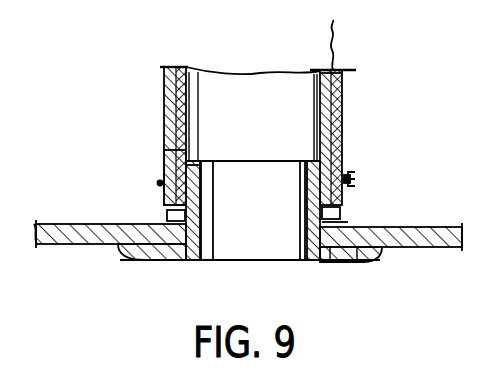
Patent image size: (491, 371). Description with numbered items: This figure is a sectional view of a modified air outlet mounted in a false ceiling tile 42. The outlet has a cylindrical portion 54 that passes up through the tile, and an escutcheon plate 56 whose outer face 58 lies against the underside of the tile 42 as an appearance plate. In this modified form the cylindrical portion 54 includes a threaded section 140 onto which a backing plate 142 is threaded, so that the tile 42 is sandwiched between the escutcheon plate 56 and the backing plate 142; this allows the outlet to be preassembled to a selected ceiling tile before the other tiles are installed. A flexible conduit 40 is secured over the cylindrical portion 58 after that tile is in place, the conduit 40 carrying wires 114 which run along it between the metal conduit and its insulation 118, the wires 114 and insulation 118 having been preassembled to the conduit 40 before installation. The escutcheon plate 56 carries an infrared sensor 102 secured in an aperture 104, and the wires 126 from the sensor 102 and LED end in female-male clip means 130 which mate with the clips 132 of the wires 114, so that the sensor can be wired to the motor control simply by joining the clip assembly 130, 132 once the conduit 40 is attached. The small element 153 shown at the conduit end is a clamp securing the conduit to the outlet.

The flexible conduit 40 is at (342, 112).
The ceiling tile 42 is at (440, 250).
The cylindrical portion 54 is at (178, 165).
The escutcheon plate 56 is at (128, 258).
The outer face 58 is at (195, 262).
The infrared sensor 102 is at (345, 262).
The aperture 104 is at (330, 262).
The wires 114 is at (337, 40).
The insulation 118 is at (342, 78).
The wires 126 is at (306, 237).
The female-male clip means 130 is at (348, 222).
The clips 132 is at (350, 212).
The threaded section 140 is at (185, 210).
The backing plate 142 is at (168, 216).
The bracket 153 is at (358, 198).